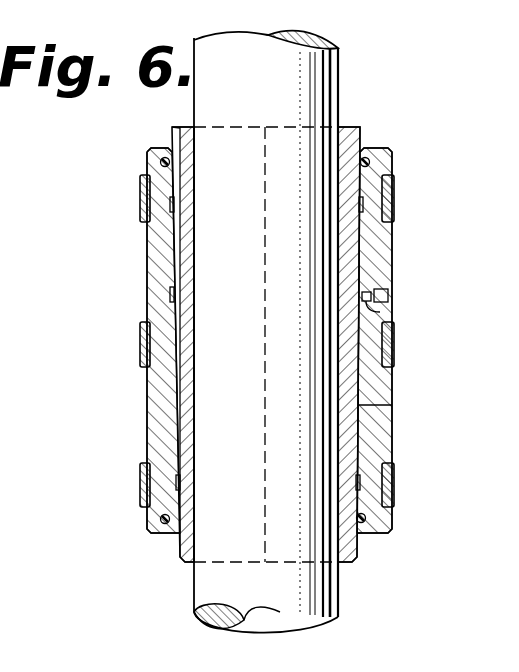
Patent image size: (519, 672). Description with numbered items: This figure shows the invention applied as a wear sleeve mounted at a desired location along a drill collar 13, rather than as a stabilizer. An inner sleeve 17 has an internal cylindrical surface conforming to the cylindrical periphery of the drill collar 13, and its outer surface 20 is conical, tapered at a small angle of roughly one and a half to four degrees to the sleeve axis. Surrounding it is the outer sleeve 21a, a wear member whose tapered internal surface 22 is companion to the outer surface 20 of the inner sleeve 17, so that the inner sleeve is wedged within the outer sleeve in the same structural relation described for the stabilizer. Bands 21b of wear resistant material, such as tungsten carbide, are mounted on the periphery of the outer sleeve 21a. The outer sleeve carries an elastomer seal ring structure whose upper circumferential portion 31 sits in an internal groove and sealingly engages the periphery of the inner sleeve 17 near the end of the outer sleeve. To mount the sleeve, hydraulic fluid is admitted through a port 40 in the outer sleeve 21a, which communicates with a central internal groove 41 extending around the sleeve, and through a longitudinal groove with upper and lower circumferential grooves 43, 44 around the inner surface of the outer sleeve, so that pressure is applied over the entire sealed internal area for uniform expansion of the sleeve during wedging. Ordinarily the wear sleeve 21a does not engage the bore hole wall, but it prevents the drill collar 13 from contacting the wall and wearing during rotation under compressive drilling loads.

The drill collar 13 is at (305, 82).
The inner sleeve 17 is at (183, 265).
The outer surface of inner sleeve 20 is at (392, 405).
The outer sleeve 21a is at (366, 270).
The bands of wear resistant material 21b is at (140, 347).
The tapered internal surface 22 is at (180, 431).
The upper circumferential seal ring portion 31 is at (160, 158).
The port 40 is at (388, 310).
The internal groove 41 is at (172, 293).
The upper circumferential groove 43 is at (170, 203).
The lower circumferential groove 44 is at (176, 480).